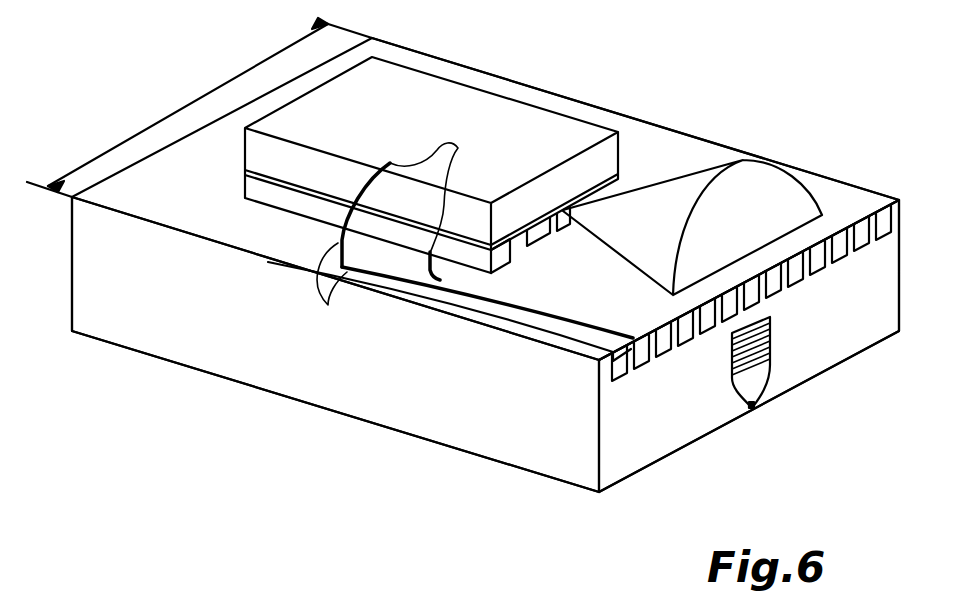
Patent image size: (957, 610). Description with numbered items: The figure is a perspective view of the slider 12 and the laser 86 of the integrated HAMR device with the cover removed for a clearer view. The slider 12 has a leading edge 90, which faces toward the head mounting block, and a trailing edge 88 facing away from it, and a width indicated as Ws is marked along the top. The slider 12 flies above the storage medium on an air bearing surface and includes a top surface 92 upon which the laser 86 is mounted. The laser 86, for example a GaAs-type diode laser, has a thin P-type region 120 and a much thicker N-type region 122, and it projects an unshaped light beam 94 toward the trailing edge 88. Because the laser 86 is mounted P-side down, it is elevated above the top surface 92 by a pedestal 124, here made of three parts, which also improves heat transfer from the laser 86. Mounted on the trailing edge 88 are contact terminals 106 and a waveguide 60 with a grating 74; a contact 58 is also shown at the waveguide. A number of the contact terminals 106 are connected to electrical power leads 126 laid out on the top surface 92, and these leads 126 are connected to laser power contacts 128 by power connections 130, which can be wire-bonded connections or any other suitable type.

The slider 12 is at (428, 405).
The contact 58 is at (755, 410).
The waveguide 60 is at (765, 388).
The grating 74 is at (763, 343).
The laser 86 is at (520, 93).
The trailing edge 88 is at (647, 453).
The leading edge 90 is at (72, 278).
The top surface 92 is at (152, 212).
The unshaped light beam 94 is at (762, 193).
The contact terminals 106 is at (832, 262).
The P-type region 120 is at (520, 234).
The N-type region 122 is at (393, 133).
The pedestal 124 is at (278, 200).
The electrical power leads 126 is at (462, 303).
The laser power contacts 128 is at (458, 148).
The power connections 130 is at (324, 287).
The substrate width Ws is at (199, 107).